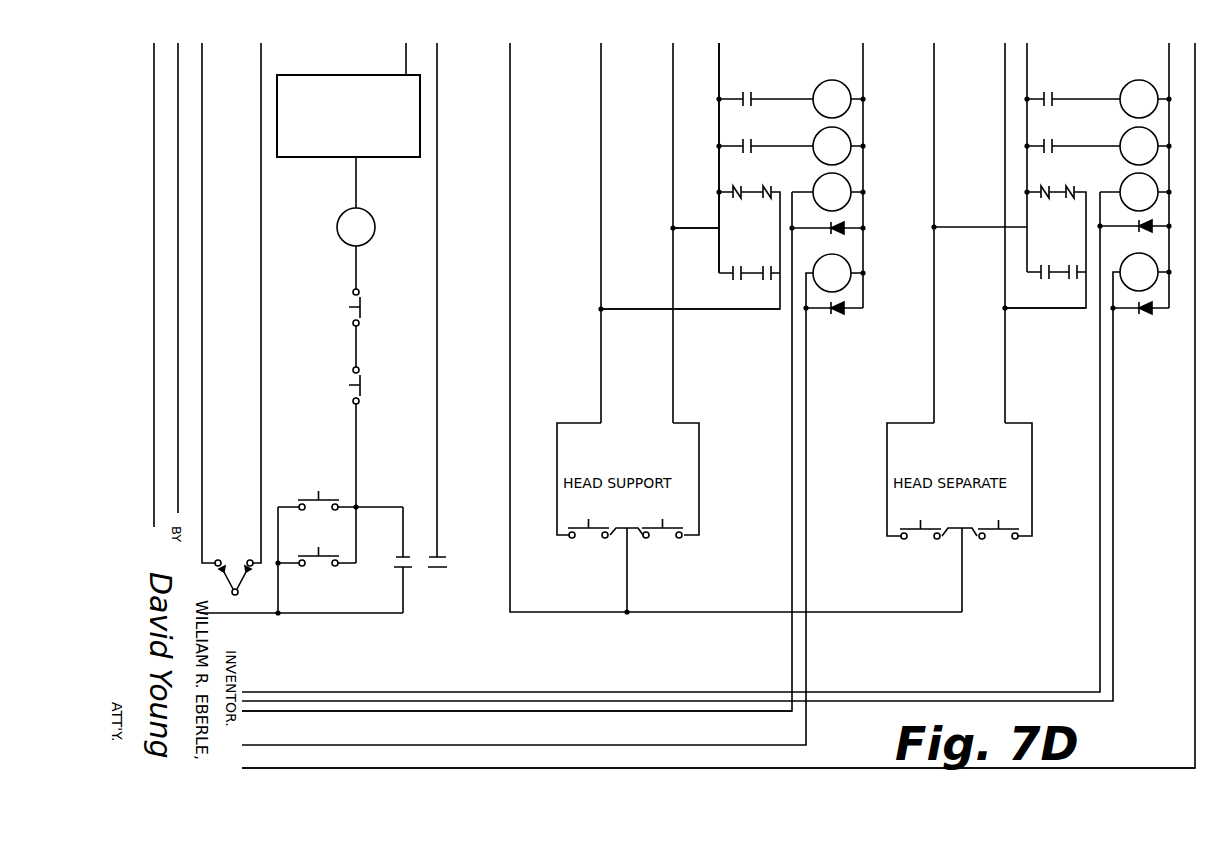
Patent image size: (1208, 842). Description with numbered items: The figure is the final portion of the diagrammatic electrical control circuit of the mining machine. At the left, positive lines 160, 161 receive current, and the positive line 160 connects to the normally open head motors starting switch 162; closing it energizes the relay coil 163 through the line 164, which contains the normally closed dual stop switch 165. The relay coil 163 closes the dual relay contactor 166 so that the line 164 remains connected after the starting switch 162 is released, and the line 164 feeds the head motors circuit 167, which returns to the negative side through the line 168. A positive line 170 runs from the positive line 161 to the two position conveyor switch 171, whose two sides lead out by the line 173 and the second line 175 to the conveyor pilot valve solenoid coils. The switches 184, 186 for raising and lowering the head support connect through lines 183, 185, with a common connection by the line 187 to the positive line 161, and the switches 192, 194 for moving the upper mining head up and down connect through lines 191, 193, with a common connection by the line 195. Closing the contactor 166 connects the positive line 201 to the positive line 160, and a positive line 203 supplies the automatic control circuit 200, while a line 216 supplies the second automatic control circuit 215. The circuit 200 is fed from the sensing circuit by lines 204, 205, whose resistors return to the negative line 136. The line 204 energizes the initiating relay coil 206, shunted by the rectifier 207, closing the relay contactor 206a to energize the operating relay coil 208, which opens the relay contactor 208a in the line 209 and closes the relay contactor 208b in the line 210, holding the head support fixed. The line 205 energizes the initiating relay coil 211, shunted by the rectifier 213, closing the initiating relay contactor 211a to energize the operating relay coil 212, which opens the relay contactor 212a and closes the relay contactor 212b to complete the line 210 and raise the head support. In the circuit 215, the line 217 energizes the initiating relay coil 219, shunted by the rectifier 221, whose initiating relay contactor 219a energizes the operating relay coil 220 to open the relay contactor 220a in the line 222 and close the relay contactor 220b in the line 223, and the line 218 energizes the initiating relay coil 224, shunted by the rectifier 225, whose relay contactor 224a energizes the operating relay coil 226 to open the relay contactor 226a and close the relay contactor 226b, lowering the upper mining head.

The negative line 136 is at (405, 768).
The positive line 160 is at (154, 257).
The positive line 161 is at (510, 175).
The head motors starting switch 162 is at (313, 552).
The relay coil 163 is at (341, 238).
The line 164 is at (358, 448).
The dual stop switch 165 is at (363, 378).
The dual relay contactor 166 is at (430, 570).
The head motors circuit 167 is at (382, 158).
The line 168 is at (406, 53).
The positive line 170 is at (178, 313).
The conveyor switch 171 is at (236, 562).
The line 173 is at (202, 362).
The second line 175 is at (261, 213).
The line 183 is at (599, 90).
The switch 184 is at (589, 533).
The line 185 is at (673, 130).
The switch 186 is at (663, 533).
The line 187 is at (628, 568).
The line 191 is at (934, 90).
The switch 192 is at (921, 533).
The line 193 is at (1005, 130).
The switch 194 is at (1003, 533).
The line 195 is at (963, 592).
The automatic control circuit 200 is at (580, 392).
The positive line 201 is at (437, 222).
The positive line 203 is at (719, 52).
The line 204 is at (518, 745).
The line 205 is at (633, 711).
The initiating relay coil 206 is at (846, 262).
The relay contactor 206a is at (750, 141).
The rectifier 207 is at (843, 315).
The operating relay coil 208 is at (846, 134).
The relay contactor 208a is at (766, 180).
The relay contactor 208b is at (740, 283).
The line 209 is at (698, 227).
The line 210 is at (722, 312).
The initiating relay coil 211 is at (846, 180).
The initiating relay contactor 211a is at (750, 93).
The operating relay coil 212 is at (846, 87).
The relay contactor 212a is at (738, 186).
The relay contactor 212b is at (770, 242).
The rectifier 213 is at (845, 225).
The second automatic control circuit 215 is at (710, 370).
The line 216 is at (1027, 52).
The line 217 is at (903, 691).
The line 218 is at (990, 701).
The initiating relay coil 219 is at (1127, 180).
The initiating relay contactor 219a is at (1054, 146).
The operating relay coil 220 is at (1126, 133).
The relay contactor 220a is at (1070, 186).
The relay contactor 220b is at (1040, 270).
The rectifier 221 is at (1147, 223).
The line 222 is at (968, 226).
The line 223 is at (1035, 307).
The initiating relay coil 224 is at (1152, 257).
The relay contactor 224a is at (1053, 99).
The rectifier 225 is at (1150, 318).
The operating relay coil 226 is at (1124, 88).
The relay contactor 226a is at (1045, 188).
The relay contactor 226b is at (1067, 270).